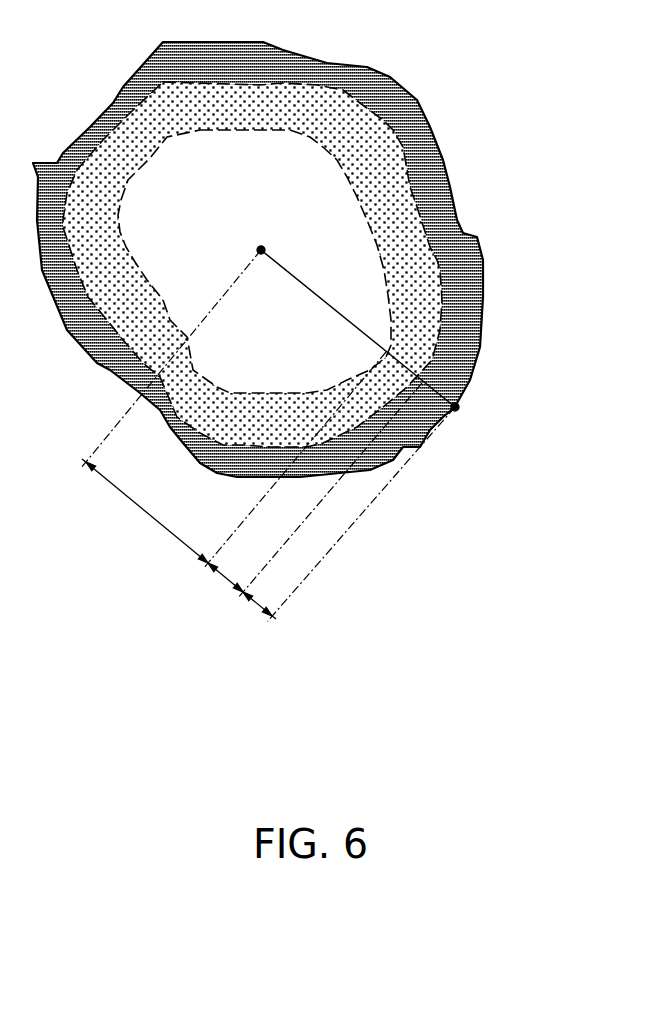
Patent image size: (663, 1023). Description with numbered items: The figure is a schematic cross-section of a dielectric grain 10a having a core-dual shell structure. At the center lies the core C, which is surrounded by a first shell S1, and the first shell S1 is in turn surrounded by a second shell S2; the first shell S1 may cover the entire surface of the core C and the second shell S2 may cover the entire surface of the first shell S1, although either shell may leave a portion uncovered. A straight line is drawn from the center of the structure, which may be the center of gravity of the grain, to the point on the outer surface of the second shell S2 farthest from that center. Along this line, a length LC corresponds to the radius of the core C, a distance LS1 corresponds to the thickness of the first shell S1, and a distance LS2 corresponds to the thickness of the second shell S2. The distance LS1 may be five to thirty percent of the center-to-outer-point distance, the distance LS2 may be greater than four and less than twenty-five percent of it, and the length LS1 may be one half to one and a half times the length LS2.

The dielectric grain 10a is at (313, 259).
The core C is at (317, 173).
The first shell S1 is at (383, 210).
The second shell S2 is at (460, 231).
The length corresponding to radius of core portion LC is at (143, 510).
The distance corresponding to thickness of first shell LS1 is at (225, 580).
The distance corresponding to thickness of second shell LS2 is at (258, 600).